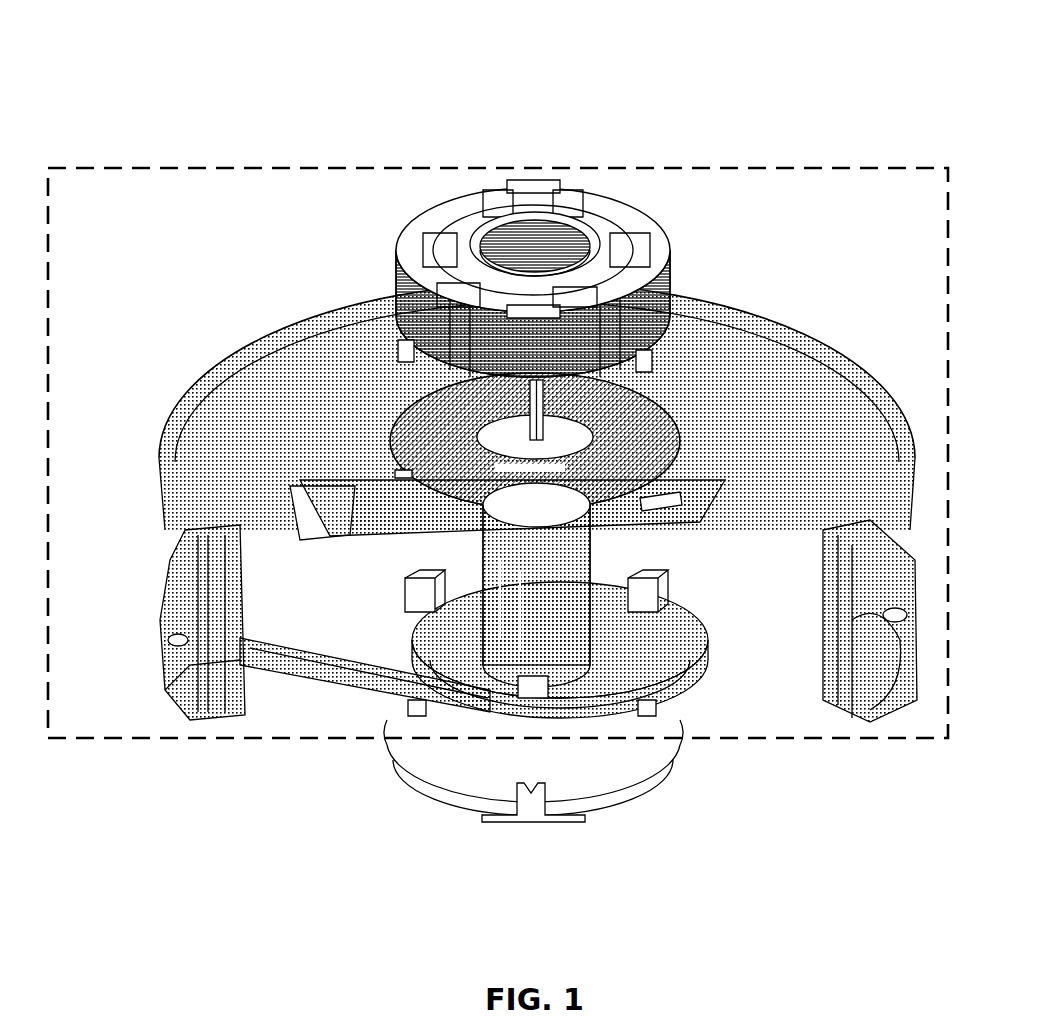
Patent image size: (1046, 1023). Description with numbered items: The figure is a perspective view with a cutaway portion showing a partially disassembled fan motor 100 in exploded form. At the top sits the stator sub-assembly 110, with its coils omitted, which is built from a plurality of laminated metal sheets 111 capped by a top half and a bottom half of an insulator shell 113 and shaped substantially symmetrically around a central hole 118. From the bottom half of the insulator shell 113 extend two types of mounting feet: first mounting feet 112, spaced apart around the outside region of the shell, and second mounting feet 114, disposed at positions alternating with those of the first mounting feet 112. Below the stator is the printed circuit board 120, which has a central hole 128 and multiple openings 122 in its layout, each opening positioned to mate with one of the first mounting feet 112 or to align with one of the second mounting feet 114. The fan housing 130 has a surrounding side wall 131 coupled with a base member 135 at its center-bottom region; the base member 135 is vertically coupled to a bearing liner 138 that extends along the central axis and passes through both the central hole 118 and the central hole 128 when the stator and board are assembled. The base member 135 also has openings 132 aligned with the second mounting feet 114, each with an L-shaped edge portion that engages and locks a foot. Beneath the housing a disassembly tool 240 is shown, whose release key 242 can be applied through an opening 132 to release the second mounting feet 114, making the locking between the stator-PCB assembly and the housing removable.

The fan motor 100 is at (300, 160).
The stator sub-assembly 110 is at (540, 225).
The laminated metal sheets 111 is at (645, 318).
The first mounting feet 112 is at (405, 348).
The insulator shell 113 is at (462, 290).
The second mounting feet 114 is at (522, 411).
The central hole 118 is at (520, 243).
The printed circuit board 120 is at (506, 403).
The openings 122 is at (522, 503).
The central hole 128 is at (515, 447).
The fan housing 130 is at (484, 660).
The side wall 131 is at (827, 623).
The openings 132 is at (548, 688).
The base member 135 is at (485, 700).
The bearing liner 138 is at (503, 563).
The disassembly tool 240 is at (556, 810).
The release key 242 is at (542, 795).